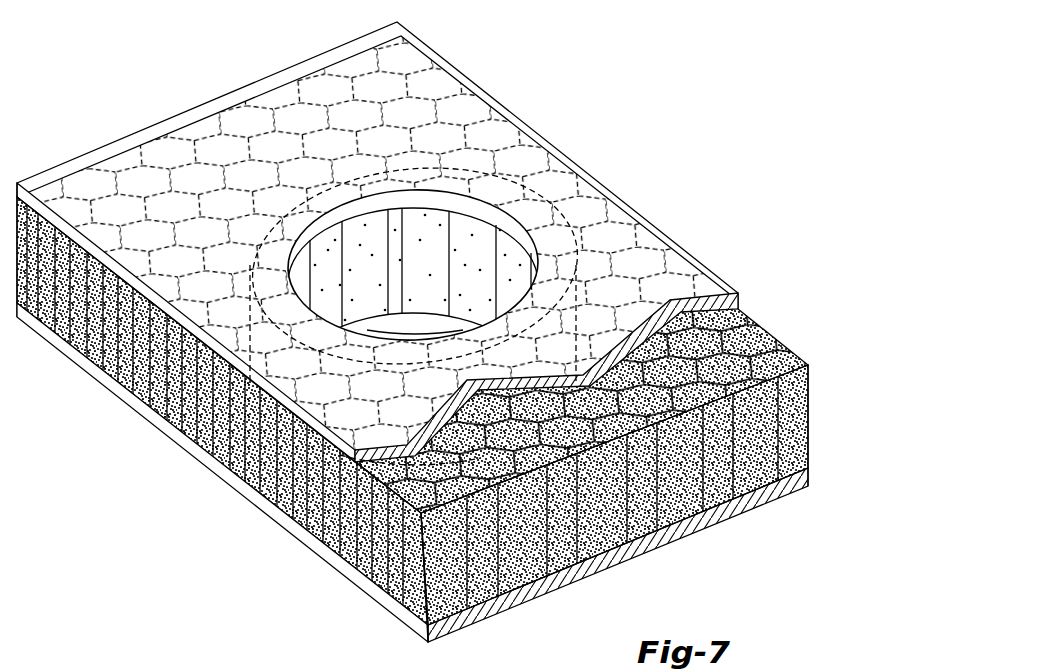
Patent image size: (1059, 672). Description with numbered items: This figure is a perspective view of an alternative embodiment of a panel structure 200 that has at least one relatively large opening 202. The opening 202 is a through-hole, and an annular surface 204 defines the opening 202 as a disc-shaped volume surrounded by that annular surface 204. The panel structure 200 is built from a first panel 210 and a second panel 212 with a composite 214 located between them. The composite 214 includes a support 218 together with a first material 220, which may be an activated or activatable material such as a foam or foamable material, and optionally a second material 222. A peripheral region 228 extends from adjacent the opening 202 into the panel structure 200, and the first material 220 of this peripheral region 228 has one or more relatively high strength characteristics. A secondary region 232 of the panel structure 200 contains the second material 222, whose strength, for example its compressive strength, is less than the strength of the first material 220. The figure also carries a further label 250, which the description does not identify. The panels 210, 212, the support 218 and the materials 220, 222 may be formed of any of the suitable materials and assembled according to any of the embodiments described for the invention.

The panel structure 200 is at (418, 335).
The opening 202 is at (449, 296).
The annular surface 204 is at (292, 290).
The first panel 210 is at (377, 231).
The second panel 212 is at (292, 527).
The composite 214 is at (418, 411).
The support 218 is at (655, 490).
The first material 220 is at (317, 247).
The second material 222 is at (750, 462).
The peripheral region 228 is at (415, 284).
The secondary region 232 is at (427, 82).
The panel region 250 is at (122, 657).